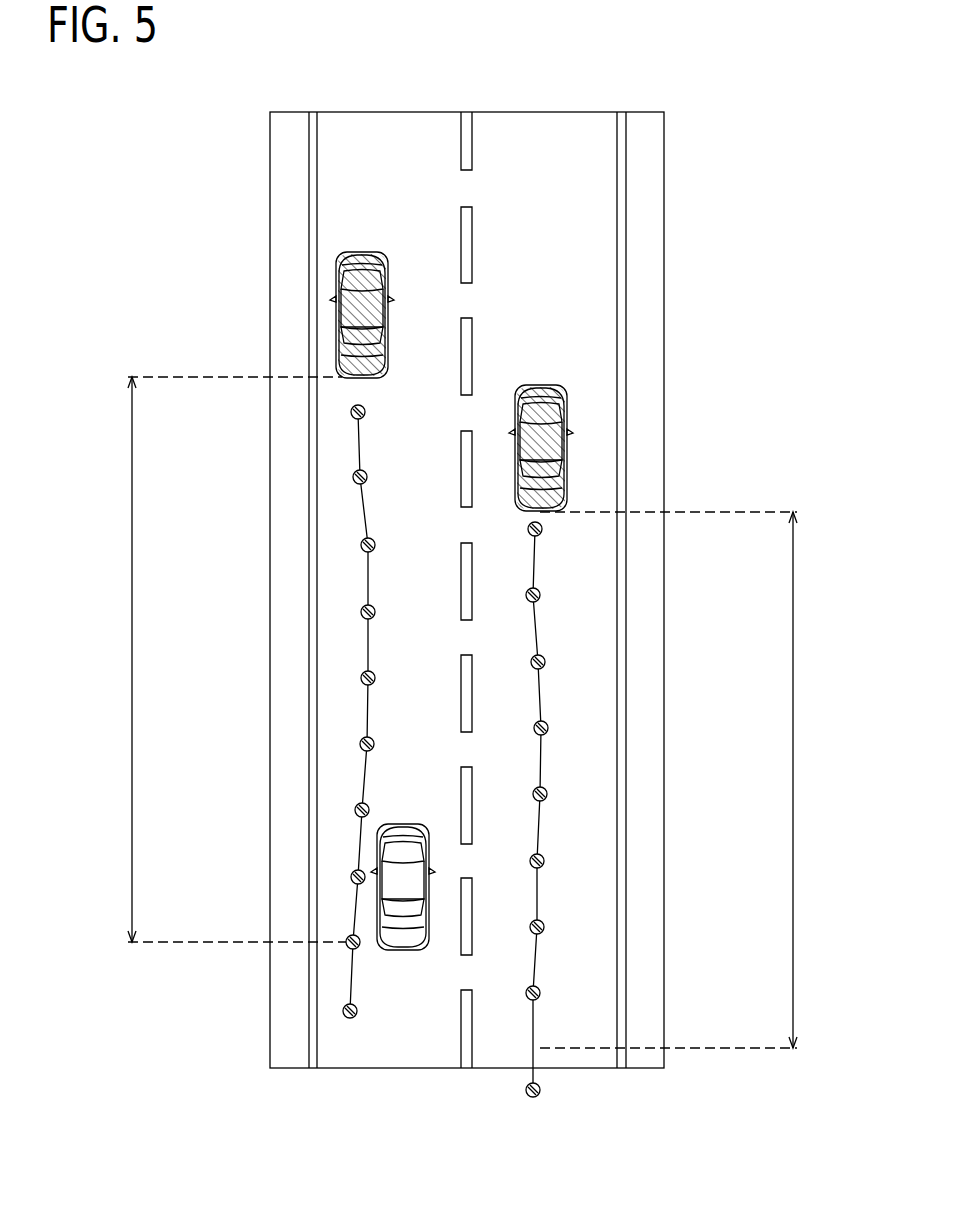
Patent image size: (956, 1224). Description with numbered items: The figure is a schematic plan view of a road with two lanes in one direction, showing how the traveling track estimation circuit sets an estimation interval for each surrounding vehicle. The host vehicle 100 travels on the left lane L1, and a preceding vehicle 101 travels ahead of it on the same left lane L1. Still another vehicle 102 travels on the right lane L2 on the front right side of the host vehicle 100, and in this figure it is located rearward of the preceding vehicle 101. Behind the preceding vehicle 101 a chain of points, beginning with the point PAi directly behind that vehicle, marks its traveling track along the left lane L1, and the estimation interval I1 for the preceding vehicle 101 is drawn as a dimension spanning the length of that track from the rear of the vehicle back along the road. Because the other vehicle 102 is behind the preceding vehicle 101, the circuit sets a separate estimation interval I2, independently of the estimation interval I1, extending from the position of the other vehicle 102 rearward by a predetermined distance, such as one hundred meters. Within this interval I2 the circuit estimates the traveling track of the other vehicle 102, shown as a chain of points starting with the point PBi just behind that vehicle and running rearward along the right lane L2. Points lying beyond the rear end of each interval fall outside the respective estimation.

The left lane L1 is at (388, 146).
The right lane L2 is at (548, 146).
The host vehicle 100 is at (402, 928).
The preceding vehicle 101 is at (368, 254).
The other vehicle 102 is at (546, 387).
The traveling track point of preceding vehicle PAi is at (351, 412).
The traveling track point of other vehicle PBi is at (542, 529).
The estimation interval for preceding vehicle I1 is at (224, 659).
The estimation interval for other vehicle I2 is at (682, 780).